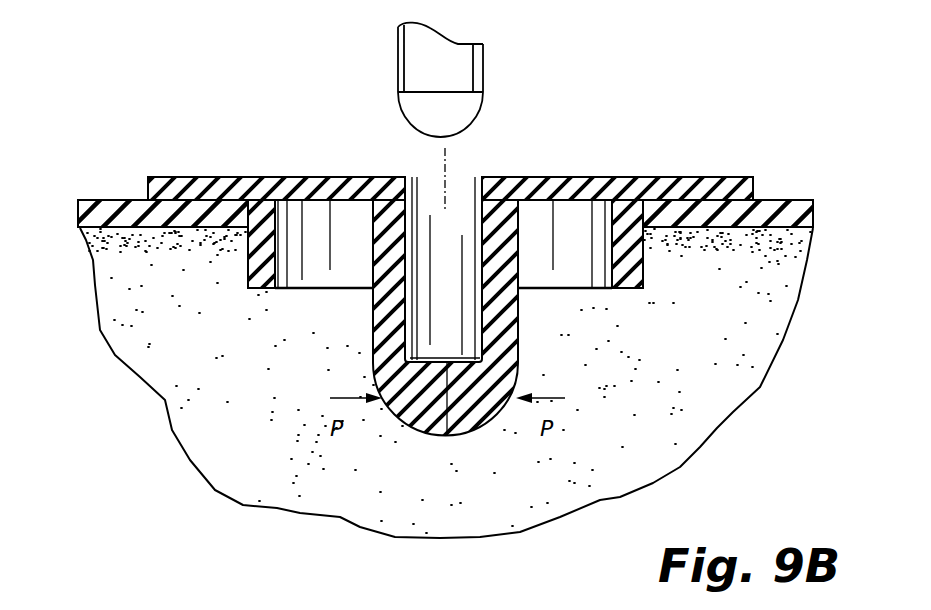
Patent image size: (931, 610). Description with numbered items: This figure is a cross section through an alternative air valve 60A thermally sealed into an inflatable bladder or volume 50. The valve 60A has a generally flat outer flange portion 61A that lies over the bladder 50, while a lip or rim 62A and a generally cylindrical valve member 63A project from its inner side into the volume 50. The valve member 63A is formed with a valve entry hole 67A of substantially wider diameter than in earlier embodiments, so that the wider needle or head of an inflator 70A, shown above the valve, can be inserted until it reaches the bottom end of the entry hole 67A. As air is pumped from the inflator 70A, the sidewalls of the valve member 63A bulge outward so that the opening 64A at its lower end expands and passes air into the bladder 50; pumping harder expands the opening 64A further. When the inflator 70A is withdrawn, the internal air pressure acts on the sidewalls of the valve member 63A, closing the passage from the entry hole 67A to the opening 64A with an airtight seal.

The inflatable bladder 50 is at (110, 212).
The valve 60A is at (450, 302).
The flange 61A is at (198, 190).
The outer wall 62A is at (256, 246).
The valve member 63A is at (374, 345).
The opening 64A is at (447, 437).
The valve entry hole 67A is at (470, 197).
The inflator 70A is at (401, 78).